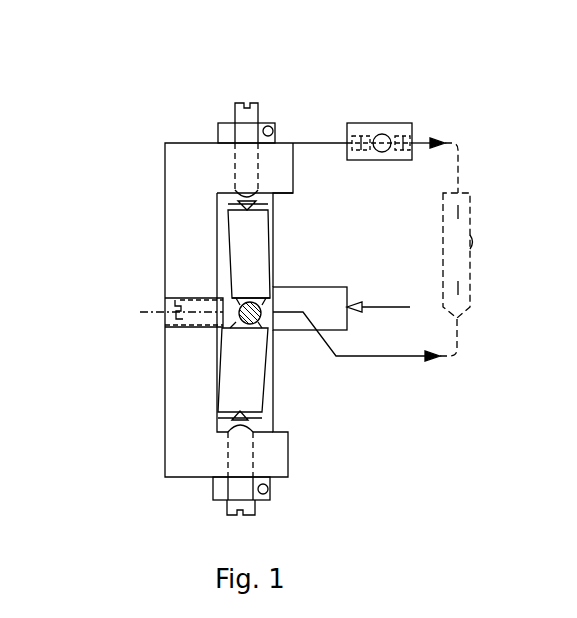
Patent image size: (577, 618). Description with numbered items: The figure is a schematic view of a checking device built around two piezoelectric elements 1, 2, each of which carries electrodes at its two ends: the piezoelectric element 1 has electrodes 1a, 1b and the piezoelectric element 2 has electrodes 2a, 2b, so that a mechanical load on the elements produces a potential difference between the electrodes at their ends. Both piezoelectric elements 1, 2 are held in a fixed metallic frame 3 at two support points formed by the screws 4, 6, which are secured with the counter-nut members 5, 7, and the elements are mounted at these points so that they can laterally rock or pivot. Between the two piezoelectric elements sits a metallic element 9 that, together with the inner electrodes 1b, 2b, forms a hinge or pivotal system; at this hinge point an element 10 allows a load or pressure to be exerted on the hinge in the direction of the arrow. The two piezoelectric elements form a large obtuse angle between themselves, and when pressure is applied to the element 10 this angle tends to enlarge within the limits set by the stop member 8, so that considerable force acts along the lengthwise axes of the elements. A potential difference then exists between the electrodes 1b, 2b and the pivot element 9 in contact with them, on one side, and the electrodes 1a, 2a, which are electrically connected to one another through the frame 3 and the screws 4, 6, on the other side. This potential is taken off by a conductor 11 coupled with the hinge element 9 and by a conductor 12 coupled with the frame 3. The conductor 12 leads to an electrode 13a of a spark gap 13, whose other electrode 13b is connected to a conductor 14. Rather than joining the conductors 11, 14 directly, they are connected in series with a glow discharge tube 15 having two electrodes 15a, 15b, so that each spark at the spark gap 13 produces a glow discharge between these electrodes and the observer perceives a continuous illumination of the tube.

The piezoelectric element 1 is at (253, 243).
The electrode 1a is at (262, 205).
The electrode 1b is at (258, 308).
The piezoelectric element 2 is at (248, 390).
The electrode 2a is at (227, 417).
The electrode 2b is at (262, 330).
The metallic frame 3 is at (182, 452).
The screw 4 is at (257, 512).
The counter-nut member 5 is at (268, 489).
The screw 6 is at (260, 107).
The counter-nut member 7 is at (272, 125).
The stop member 8 is at (165, 303).
The metallic element 9 is at (243, 320).
The element 10 is at (322, 298).
The conductor 11 is at (377, 358).
The conductor 12 is at (310, 145).
The spark gap 13 is at (377, 160).
The electrode 13a is at (360, 138).
The electrode 13b is at (403, 138).
The conductor 14 is at (423, 133).
The glow discharge tube 15 is at (472, 242).
The electrode 15a is at (458, 212).
The electrode 15b is at (458, 288).